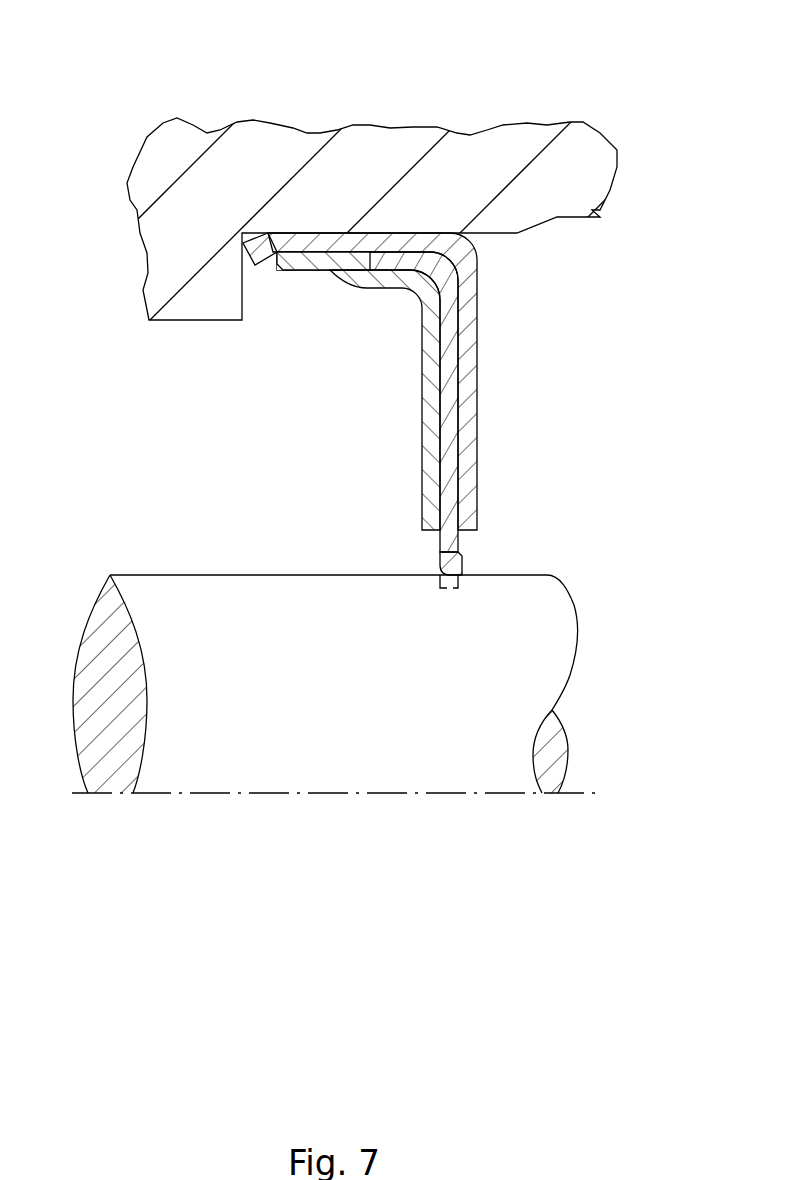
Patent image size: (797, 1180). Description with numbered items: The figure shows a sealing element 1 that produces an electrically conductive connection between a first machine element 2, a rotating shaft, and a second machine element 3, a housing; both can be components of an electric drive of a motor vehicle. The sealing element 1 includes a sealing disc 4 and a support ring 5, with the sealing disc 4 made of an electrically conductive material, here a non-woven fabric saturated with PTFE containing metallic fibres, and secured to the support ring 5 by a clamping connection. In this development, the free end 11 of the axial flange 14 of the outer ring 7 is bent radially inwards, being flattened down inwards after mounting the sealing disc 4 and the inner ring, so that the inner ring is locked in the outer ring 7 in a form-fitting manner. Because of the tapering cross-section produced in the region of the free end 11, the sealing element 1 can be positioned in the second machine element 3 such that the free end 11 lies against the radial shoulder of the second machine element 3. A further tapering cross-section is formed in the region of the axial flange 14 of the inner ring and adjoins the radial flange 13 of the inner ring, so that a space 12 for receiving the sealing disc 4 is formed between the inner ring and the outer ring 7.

The sealing element 1 is at (508, 320).
The first machine element 2 is at (450, 672).
The second machine element 3 is at (447, 210).
The sealing disc 4 is at (443, 552).
The support ring 5 is at (460, 277).
The outer ring 7 is at (430, 435).
The free end 11 is at (257, 240).
The space 12 is at (360, 258).
The radial flange 13 is at (423, 360).
The axial flange 14 is at (283, 257).